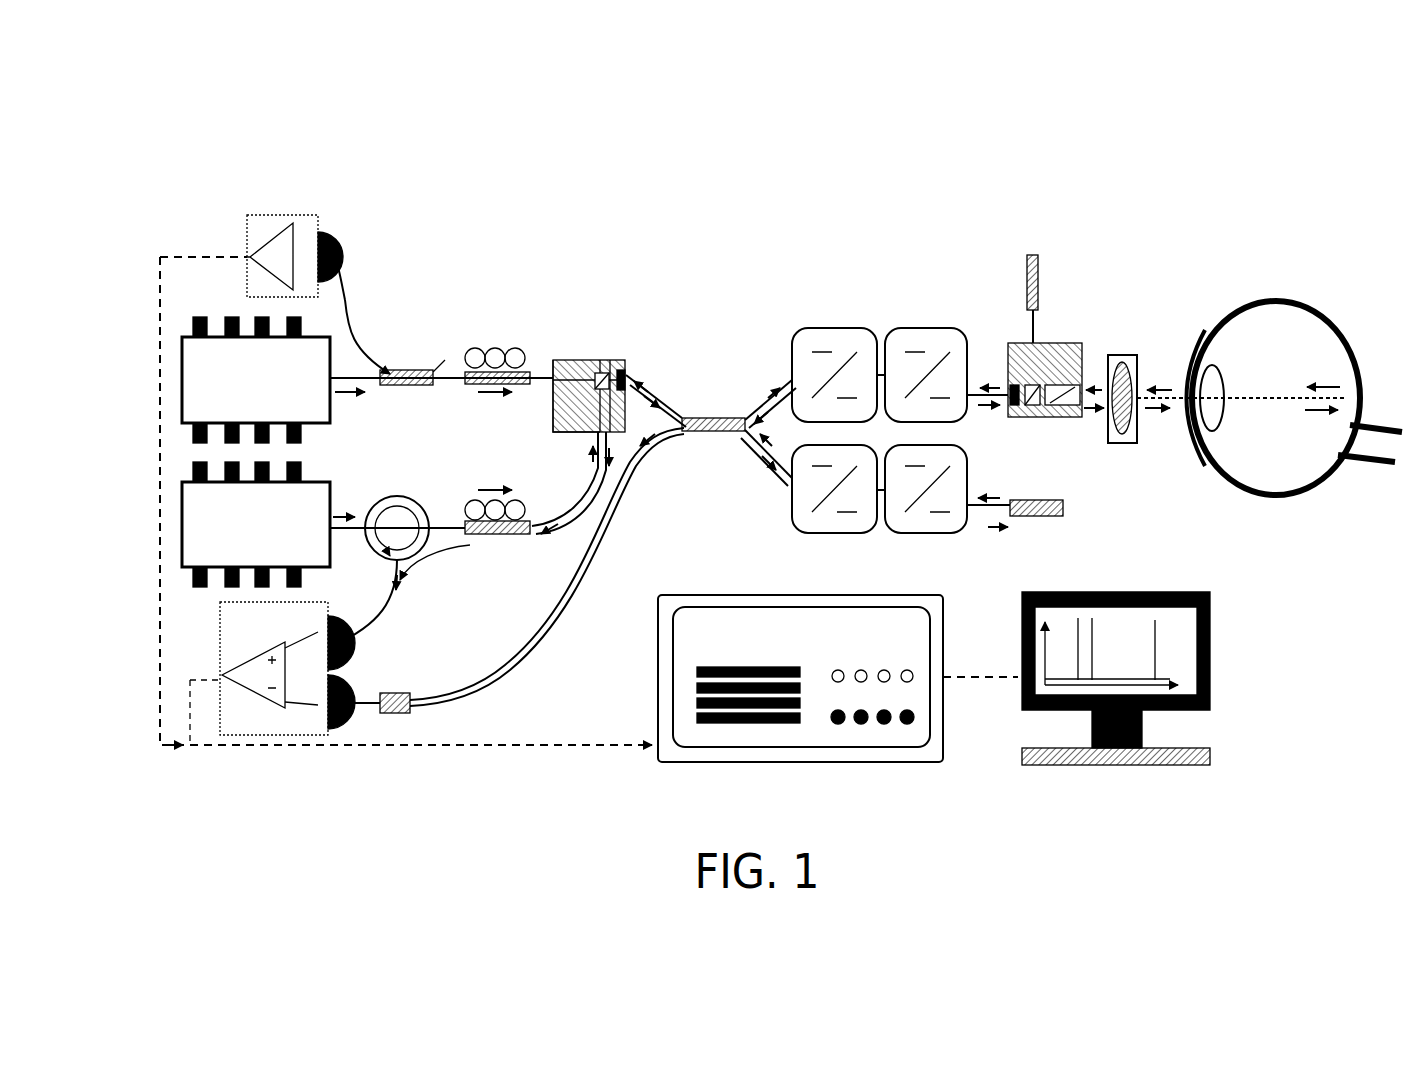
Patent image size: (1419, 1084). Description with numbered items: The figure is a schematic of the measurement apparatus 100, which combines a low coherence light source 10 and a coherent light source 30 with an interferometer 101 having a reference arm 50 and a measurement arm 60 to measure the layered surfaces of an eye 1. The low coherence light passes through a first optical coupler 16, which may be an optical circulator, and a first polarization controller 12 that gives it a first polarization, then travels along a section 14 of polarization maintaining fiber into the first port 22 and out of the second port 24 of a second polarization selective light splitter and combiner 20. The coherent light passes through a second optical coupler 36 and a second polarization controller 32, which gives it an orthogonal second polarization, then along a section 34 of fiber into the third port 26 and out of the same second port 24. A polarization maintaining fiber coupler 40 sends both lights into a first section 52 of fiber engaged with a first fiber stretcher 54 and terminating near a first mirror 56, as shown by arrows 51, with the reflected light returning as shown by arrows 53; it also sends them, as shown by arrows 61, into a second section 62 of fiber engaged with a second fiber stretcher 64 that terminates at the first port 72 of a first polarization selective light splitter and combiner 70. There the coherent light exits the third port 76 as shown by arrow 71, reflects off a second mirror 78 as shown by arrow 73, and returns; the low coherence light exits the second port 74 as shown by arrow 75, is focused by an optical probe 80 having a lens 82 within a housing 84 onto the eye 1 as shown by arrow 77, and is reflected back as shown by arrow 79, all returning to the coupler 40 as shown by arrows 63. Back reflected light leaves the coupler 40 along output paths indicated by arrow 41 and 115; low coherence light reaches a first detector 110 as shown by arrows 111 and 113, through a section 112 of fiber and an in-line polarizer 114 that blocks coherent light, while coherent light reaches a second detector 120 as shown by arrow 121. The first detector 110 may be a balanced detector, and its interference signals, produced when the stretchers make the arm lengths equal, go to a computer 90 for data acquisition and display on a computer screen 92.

The eye 1 is at (1310, 298).
The low coherence light source 10 is at (182, 522).
The first polarization controller 12 is at (495, 535).
The section of polarization maintaining optical fiber 14 is at (590, 490).
The first optical coupler 16 is at (397, 496).
The second polarization selective light splitter and combiner 20 is at (581, 357).
The first port 22 is at (592, 412).
The second port 24 is at (619, 368).
The third port 26 is at (563, 368).
The coherent light source 30 is at (182, 385).
The second polarization controller 32 is at (493, 348).
The section of polarization maintaining optical fiber 34 is at (539, 378).
The second optical coupler 36 is at (418, 370).
The polarization maintaining fiber coupler 40 is at (713, 418).
The arrow 41 is at (668, 398).
The reference arm 50 is at (889, 544).
The arrows 51 is at (752, 444).
The first section of polarization maintaining optical fiber 52 is at (785, 485).
The arrows 53 is at (795, 452).
The first fiber stretcher 54 is at (847, 535).
The first mirror 56 is at (1040, 517).
The measurement arm 60 is at (879, 314).
The arrows 61 is at (980, 408).
The second section of polarization maintaining optical fiber 62 is at (785, 380).
The arrows 63 is at (765, 384).
The second fiber stretcher 64 is at (905, 328).
The first polarization selective light splitter and combiner 70 is at (1065, 352).
The arrow 71 is at (1047, 306).
The first port 72 is at (1015, 406).
The arrow 73 is at (1020, 336).
The second port 74 is at (1070, 406).
The arrow 75 is at (1088, 410).
The third port 76 is at (1041, 372).
The arrow 77 is at (1150, 410).
The second mirror 78 is at (1027, 278).
The arrow 79 is at (1097, 386).
The optical probe 80 is at (1159, 356).
The lens 82 is at (1135, 370).
The housing 84 is at (1128, 375).
The computer 90 is at (797, 766).
The computer screen 92 is at (1210, 640).
The apparatus 100 is at (1127, 146).
The interferometer 101 is at (735, 490).
The first detector 110 is at (298, 735).
The arrow 111 is at (355, 697).
The section of polarization maintaining optical fiber 112 is at (533, 655).
The arrow 113 is at (344, 630).
The in-line polarizer 114 is at (395, 693).
The output path 115 is at (678, 434).
The second detector 120 is at (310, 218).
The arrow 121 is at (360, 270).